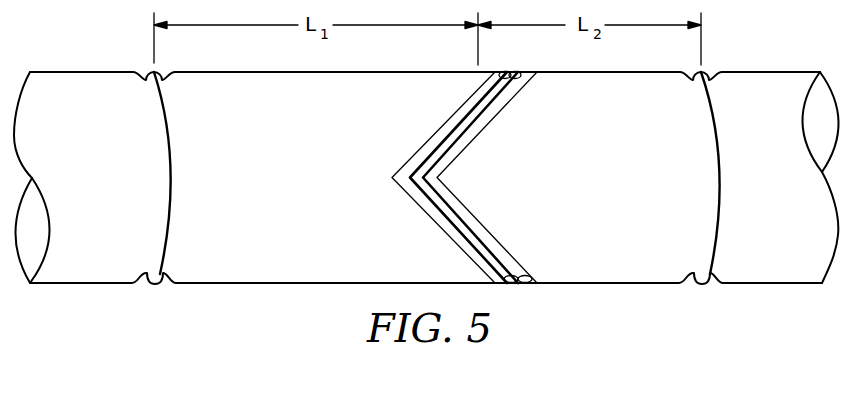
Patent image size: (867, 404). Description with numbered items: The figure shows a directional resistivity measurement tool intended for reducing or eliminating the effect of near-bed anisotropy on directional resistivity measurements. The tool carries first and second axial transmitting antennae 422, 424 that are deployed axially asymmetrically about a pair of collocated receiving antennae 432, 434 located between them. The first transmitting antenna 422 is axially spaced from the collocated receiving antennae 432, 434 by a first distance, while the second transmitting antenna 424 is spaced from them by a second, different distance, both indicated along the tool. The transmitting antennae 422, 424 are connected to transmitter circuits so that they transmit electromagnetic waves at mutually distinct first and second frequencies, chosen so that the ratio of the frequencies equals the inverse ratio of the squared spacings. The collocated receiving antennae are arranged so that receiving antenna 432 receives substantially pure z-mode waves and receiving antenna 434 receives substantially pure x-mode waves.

The first axial transmitting antenna 422 is at (172, 178).
The second axial transmitting antenna 424 is at (718, 202).
The receiving antenna 432 is at (459, 126).
The receiving antenna 434 is at (462, 213).